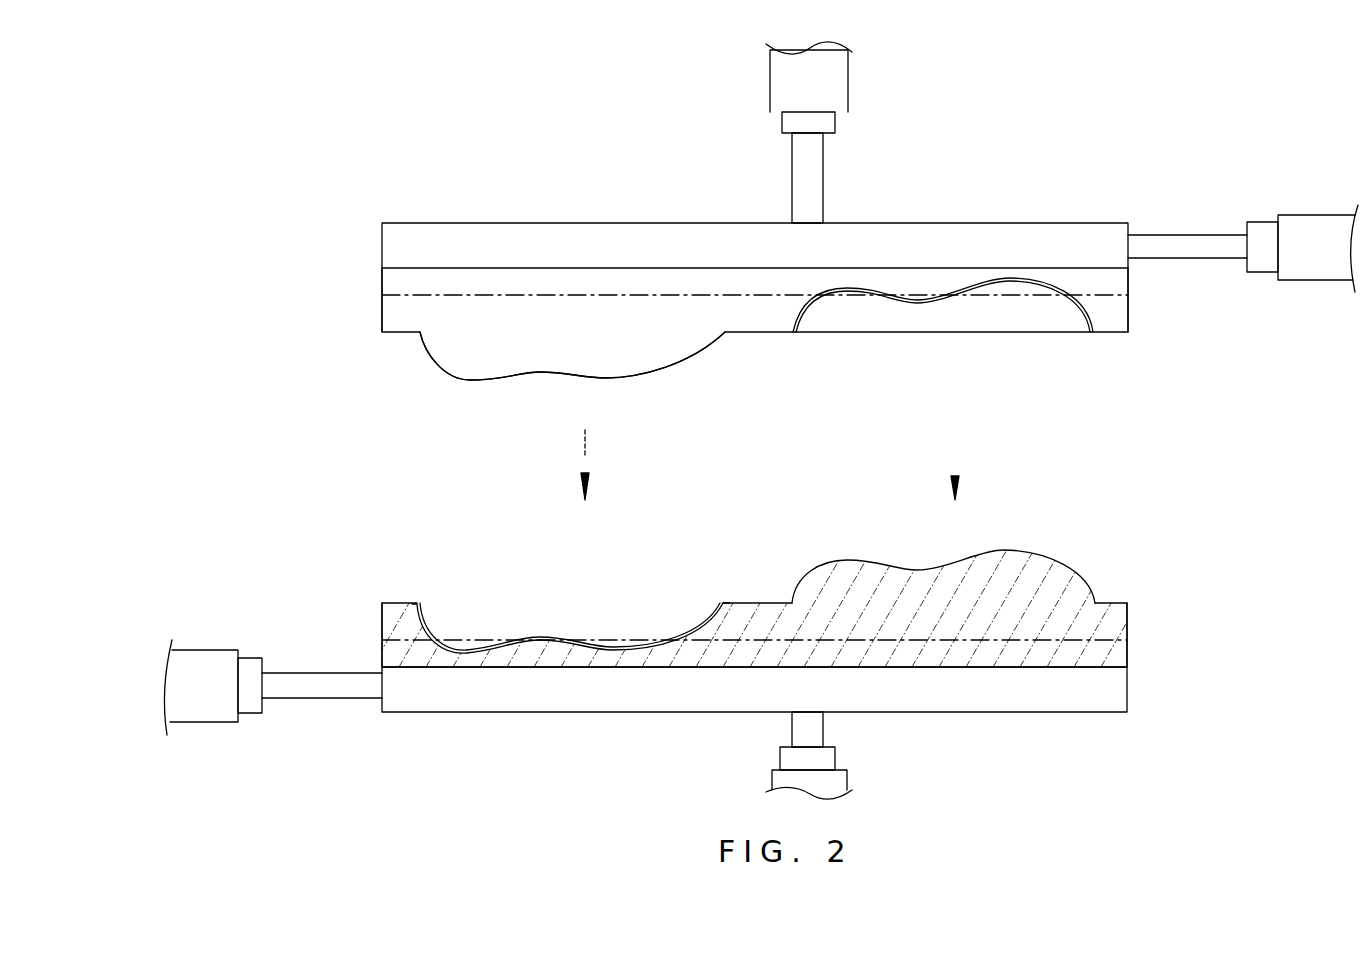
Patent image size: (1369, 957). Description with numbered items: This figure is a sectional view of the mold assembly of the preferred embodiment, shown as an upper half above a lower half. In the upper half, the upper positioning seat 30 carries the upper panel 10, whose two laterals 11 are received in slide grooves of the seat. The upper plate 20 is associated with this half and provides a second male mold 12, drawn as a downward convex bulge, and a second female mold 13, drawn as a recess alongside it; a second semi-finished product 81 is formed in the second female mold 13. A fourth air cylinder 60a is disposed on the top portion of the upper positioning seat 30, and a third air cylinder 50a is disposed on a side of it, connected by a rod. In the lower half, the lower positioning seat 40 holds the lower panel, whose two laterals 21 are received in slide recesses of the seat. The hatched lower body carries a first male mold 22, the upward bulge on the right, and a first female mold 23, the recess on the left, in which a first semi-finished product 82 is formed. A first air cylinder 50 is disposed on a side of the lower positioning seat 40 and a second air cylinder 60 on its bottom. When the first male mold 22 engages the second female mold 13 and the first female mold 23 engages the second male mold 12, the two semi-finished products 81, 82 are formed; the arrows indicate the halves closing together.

The upper panel 10 is at (749, 317).
The laterals of the upper panel 11 is at (382, 280).
The second male mold 12 is at (573, 365).
The second female mold 13 is at (948, 317).
The second semi-finished product 81 is at (935, 300).
The upper positioning seat 30 is at (752, 233).
The fourth air cylinder 60a is at (782, 80).
The third air cylinder 50a is at (1287, 223).
The upper plate 20 is at (757, 615).
The laterals of the lower panel 21 is at (382, 647).
The first male mold 22 is at (930, 578).
The first female mold 23 is at (620, 620).
The first semi-finished product 82 is at (557, 645).
The lower positioning seat 40 is at (748, 697).
The first air cylinder 50 is at (205, 663).
The second air cylinder 60 is at (820, 732).